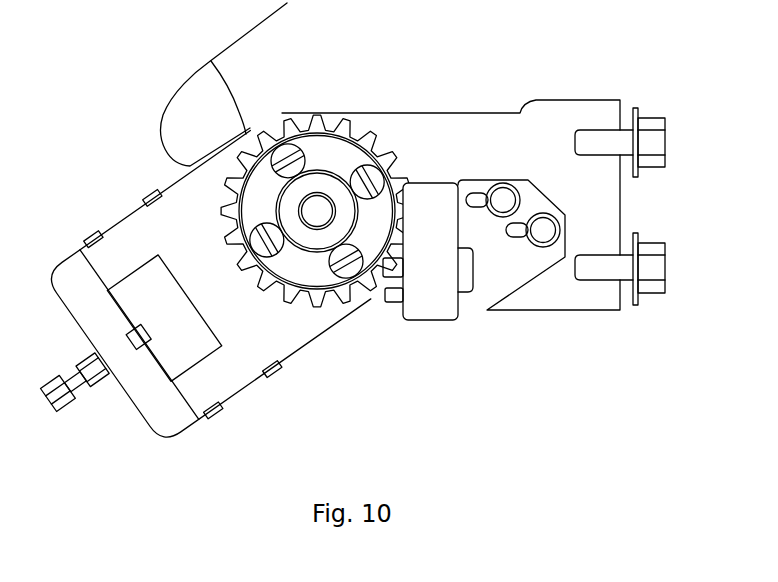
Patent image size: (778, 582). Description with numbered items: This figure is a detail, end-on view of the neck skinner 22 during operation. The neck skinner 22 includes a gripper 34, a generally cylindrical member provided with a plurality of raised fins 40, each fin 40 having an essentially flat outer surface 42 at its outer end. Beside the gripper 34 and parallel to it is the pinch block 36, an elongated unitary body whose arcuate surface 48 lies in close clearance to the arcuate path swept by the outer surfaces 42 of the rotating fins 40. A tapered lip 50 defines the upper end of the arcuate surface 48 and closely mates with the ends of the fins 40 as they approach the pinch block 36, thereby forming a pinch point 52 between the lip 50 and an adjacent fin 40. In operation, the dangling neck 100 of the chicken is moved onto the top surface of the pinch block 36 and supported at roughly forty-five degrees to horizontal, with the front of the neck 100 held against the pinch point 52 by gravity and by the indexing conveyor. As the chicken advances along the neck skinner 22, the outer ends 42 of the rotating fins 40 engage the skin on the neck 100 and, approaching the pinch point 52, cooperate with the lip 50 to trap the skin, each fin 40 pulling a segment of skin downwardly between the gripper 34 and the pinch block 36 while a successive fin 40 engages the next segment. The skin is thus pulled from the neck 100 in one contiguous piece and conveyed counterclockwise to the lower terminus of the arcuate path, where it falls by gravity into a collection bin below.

The neck skinner 22 is at (504, 396).
The gripper 34 is at (317, 276).
The pinch block 36 is at (213, 373).
The fins 40 is at (408, 182).
The flat surface 42 is at (342, 114).
The arcuate surface 48 is at (277, 300).
The tapered lip 50 is at (246, 130).
The pinch point 52 is at (256, 125).
The neck 100 is at (180, 145).